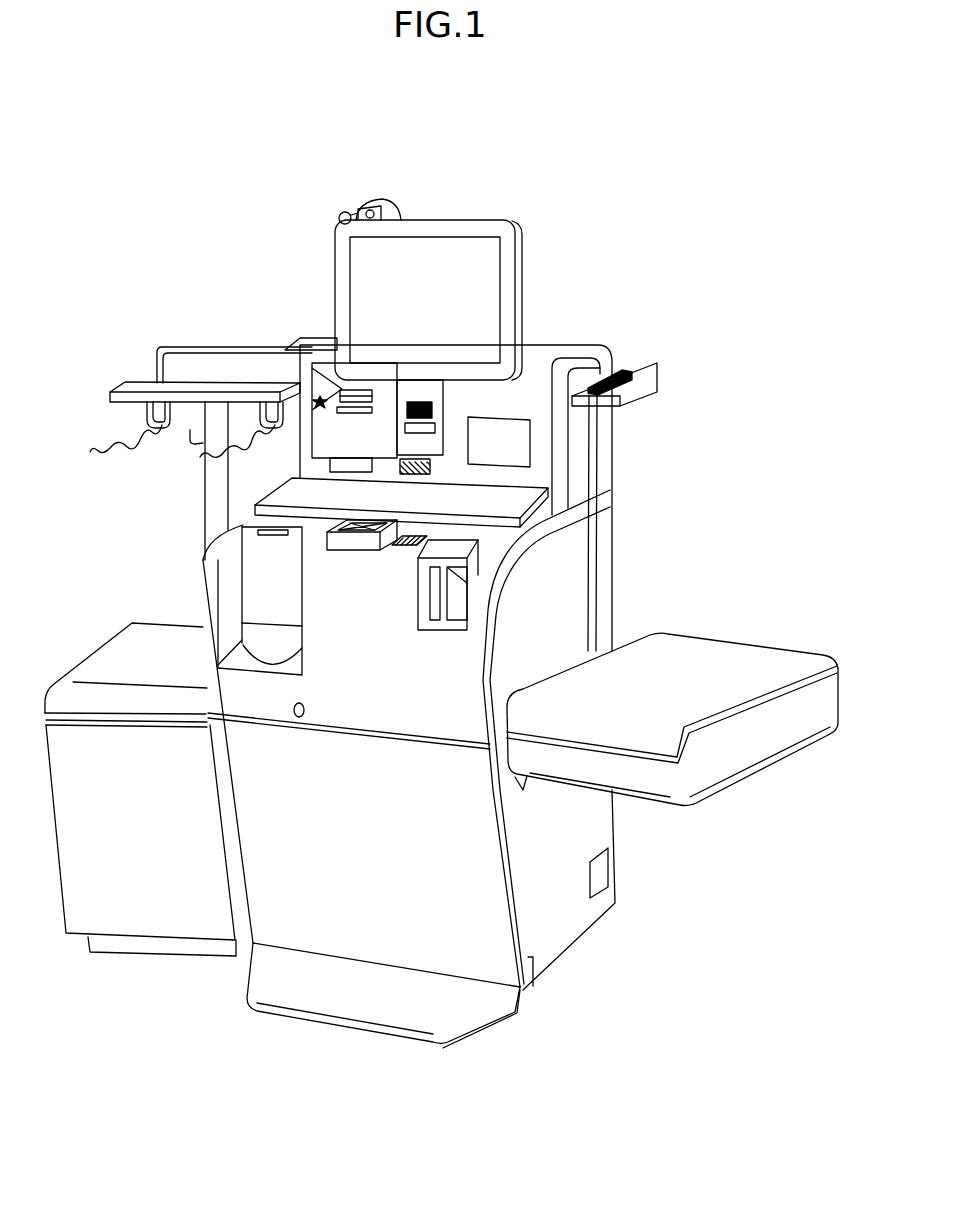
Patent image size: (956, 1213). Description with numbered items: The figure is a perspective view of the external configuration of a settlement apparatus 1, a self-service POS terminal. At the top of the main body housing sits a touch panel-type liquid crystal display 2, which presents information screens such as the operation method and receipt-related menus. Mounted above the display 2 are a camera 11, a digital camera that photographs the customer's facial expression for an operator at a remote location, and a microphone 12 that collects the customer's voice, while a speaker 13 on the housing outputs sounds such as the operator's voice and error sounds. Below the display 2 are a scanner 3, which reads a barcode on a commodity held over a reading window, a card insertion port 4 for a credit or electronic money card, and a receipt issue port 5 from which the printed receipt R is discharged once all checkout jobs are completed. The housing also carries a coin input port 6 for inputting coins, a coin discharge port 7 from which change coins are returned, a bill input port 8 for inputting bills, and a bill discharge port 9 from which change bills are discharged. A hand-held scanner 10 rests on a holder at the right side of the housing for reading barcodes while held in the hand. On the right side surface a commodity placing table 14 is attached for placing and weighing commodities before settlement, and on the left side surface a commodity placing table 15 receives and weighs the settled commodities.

The settlement apparatus 1 is at (440, 150).
The touch panel-type liquid crystal display 2 is at (448, 222).
The scanner 3 is at (530, 440).
The card insertion port 4 is at (436, 418).
The receipt issue port 5 is at (307, 387).
The coin input port 6 is at (330, 530).
The coin discharge port 7 is at (262, 655).
The bill input port 8 is at (455, 608).
The bill discharge port 9 is at (435, 585).
The hand-held scanner 10 is at (615, 373).
The camera 11 is at (372, 200).
The microphone 12 is at (344, 212).
The speaker 13 is at (435, 466).
The commodity placing table 14 is at (707, 672).
The commodity placing table 15 is at (118, 655).
The receipt R is at (320, 402).